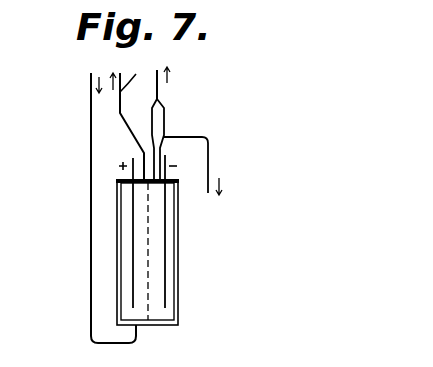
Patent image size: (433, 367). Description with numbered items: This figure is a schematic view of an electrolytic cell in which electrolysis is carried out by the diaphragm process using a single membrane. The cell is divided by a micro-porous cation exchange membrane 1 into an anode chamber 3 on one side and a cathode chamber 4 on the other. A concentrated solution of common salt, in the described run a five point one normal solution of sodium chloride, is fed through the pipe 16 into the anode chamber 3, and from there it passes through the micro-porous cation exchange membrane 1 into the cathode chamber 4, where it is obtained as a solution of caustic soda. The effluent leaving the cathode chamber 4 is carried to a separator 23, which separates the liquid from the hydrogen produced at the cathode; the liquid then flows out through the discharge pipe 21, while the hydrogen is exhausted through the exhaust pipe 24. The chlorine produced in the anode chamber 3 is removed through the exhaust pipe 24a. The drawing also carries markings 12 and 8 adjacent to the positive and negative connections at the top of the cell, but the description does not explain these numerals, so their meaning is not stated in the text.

The micro-porous cation exchange membrane 1 is at (150, 282).
The anode chamber 3 is at (124, 281).
The cathode chamber 4 is at (171, 253).
The negative electrode lead 8 is at (170, 229).
The positive electrode lead 12 is at (126, 165).
The pipe 16 is at (91, 103).
The discharge pipe 21 is at (208, 164).
The separator 23 is at (166, 121).
The exhaust pipe 24 is at (160, 95).
The exhaust pipe 24a is at (136, 76).